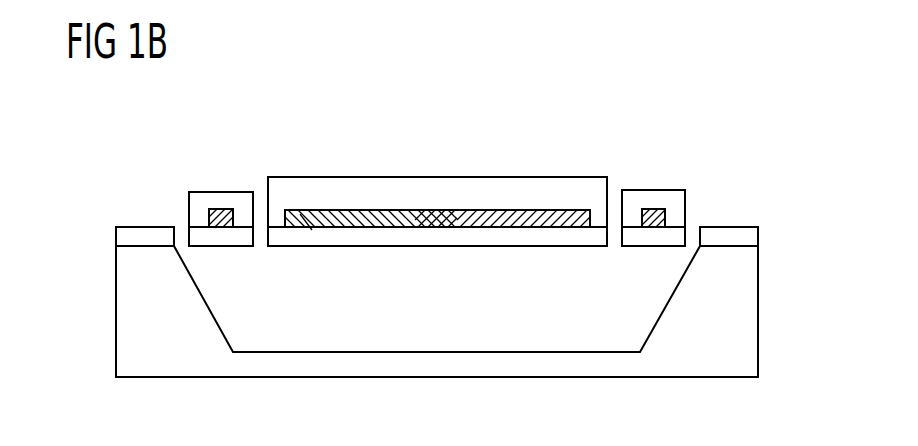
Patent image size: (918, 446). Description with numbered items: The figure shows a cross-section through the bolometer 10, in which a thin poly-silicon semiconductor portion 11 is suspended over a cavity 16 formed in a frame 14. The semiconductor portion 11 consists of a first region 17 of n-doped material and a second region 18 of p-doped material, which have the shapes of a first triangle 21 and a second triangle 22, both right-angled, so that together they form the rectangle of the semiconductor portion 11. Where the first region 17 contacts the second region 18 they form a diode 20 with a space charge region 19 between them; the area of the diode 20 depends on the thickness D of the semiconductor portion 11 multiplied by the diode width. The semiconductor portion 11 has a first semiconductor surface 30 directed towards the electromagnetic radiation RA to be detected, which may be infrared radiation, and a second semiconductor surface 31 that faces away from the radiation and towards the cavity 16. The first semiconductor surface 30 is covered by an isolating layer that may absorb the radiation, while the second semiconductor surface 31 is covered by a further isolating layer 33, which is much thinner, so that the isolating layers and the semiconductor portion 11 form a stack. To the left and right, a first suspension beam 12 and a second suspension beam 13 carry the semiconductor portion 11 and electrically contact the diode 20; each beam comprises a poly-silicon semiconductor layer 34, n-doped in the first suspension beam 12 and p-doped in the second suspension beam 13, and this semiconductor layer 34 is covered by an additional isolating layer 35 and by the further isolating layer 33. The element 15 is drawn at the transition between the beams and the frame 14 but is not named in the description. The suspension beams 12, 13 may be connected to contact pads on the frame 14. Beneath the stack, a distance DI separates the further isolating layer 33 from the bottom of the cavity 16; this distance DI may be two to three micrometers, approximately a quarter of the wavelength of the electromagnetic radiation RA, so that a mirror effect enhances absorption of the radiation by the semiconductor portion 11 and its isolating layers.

The bolometer 10 is at (264, 110).
The semiconductor portion 11 is at (286, 220).
The first suspension beam 12 is at (219, 182).
The second suspension beam 13 is at (655, 180).
The frame 14 is at (128, 322).
The connection region 15 is at (183, 232).
The cavity 16 is at (560, 333).
The first region 17 is at (365, 233).
The second region 18 is at (490, 222).
The space charge region 19 is at (458, 252).
The diode 20 is at (426, 208).
The first triangle 21 is at (323, 210).
The second triangle 22 is at (481, 210).
The first semiconductor surface 30 is at (349, 210).
The second semiconductor surface 31 is at (308, 226).
The further isolating layer 33 is at (127, 236).
The semiconductor layer 34 is at (230, 210).
The additional isolating layer 35 is at (208, 200).
The thickness D is at (513, 297).
The distance DI is at (394, 248).
The electromagnetic radiation RA is at (488, 121).